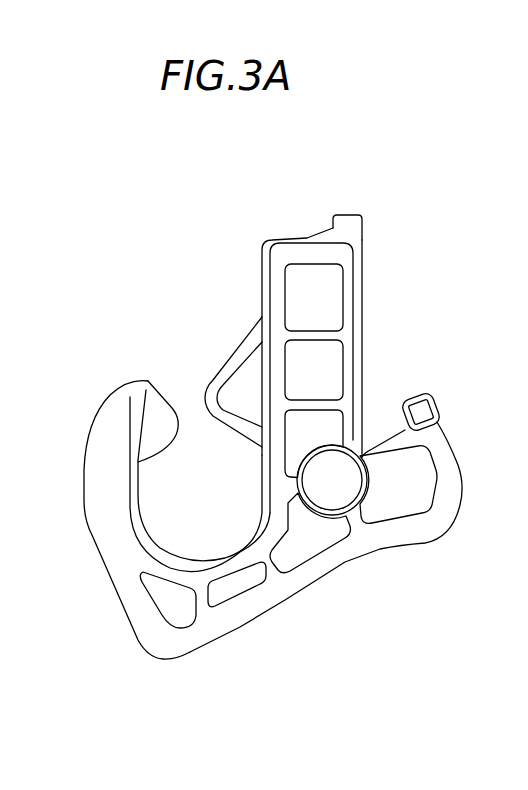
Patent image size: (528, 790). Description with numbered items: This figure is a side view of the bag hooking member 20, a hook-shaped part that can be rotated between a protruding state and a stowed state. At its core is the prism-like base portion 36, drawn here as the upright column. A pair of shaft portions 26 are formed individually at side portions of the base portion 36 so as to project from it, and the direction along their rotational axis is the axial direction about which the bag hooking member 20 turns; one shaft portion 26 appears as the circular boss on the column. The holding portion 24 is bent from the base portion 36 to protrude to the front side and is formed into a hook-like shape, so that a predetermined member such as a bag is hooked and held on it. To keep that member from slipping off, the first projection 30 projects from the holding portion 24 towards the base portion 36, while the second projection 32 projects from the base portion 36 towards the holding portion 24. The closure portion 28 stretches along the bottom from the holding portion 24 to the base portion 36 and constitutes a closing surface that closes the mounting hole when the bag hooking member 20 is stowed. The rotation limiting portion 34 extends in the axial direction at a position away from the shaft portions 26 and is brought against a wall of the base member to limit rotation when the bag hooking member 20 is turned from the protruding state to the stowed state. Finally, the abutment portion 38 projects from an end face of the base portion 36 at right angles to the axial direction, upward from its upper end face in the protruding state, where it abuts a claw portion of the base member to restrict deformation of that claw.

The bag hooking member 20 is at (234, 684).
The holding portion 24 is at (103, 540).
The shaft portions 26 is at (345, 483).
The closure portion 28 is at (297, 596).
The first projection 30 is at (167, 420).
The second projection 32 is at (218, 370).
The rotation limiting portion 34 is at (423, 403).
The base portion 36 is at (350, 278).
The abutment portion 38 is at (349, 214).